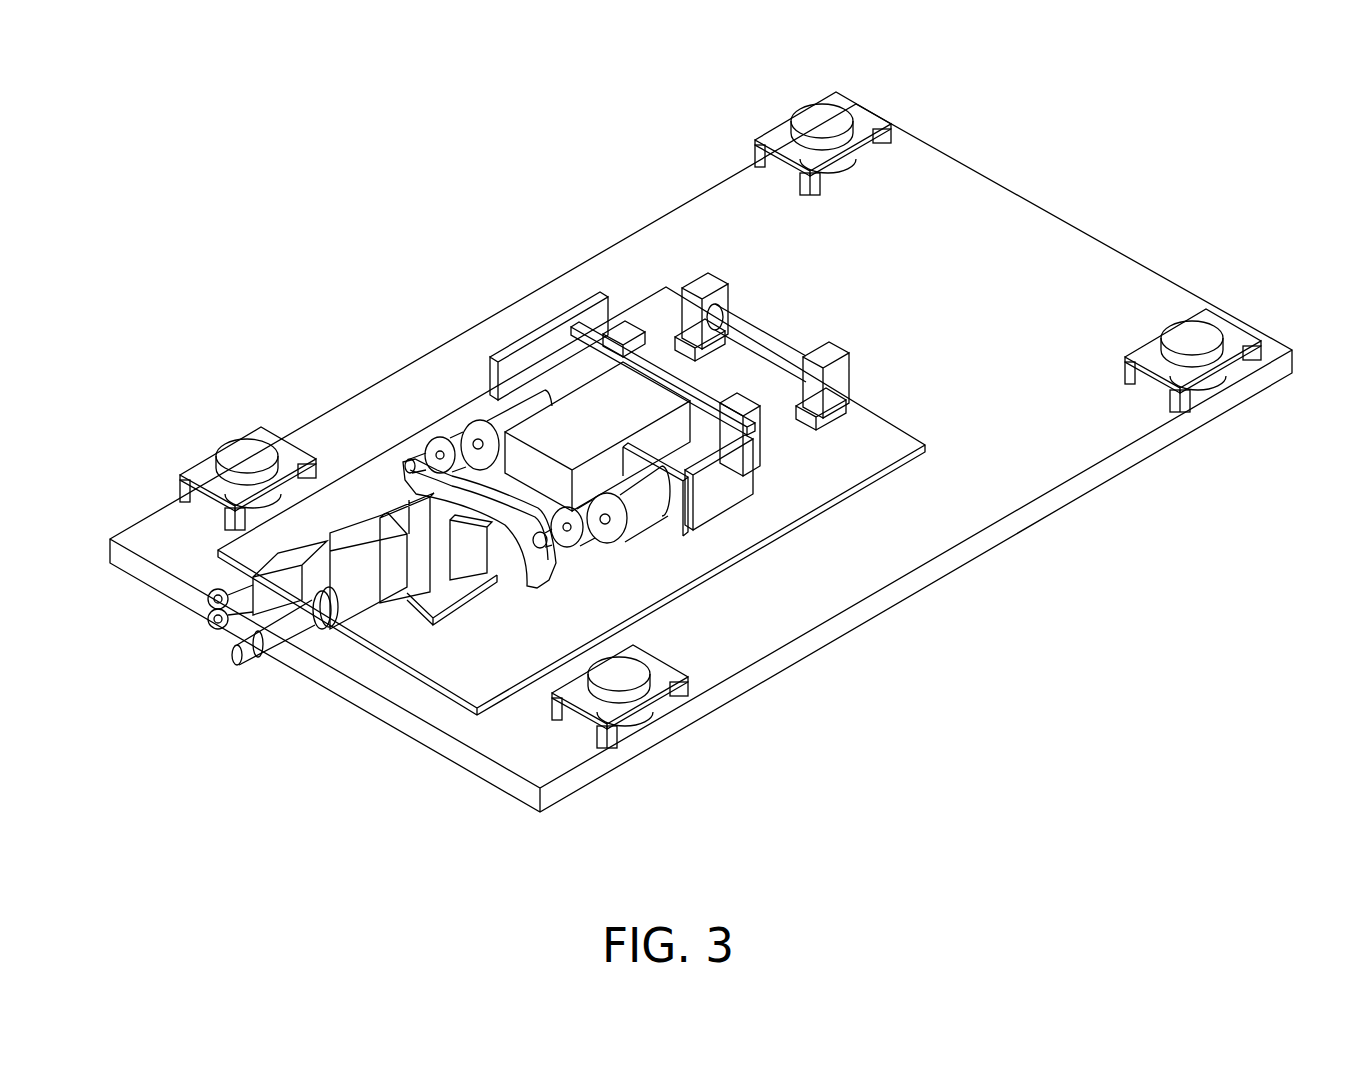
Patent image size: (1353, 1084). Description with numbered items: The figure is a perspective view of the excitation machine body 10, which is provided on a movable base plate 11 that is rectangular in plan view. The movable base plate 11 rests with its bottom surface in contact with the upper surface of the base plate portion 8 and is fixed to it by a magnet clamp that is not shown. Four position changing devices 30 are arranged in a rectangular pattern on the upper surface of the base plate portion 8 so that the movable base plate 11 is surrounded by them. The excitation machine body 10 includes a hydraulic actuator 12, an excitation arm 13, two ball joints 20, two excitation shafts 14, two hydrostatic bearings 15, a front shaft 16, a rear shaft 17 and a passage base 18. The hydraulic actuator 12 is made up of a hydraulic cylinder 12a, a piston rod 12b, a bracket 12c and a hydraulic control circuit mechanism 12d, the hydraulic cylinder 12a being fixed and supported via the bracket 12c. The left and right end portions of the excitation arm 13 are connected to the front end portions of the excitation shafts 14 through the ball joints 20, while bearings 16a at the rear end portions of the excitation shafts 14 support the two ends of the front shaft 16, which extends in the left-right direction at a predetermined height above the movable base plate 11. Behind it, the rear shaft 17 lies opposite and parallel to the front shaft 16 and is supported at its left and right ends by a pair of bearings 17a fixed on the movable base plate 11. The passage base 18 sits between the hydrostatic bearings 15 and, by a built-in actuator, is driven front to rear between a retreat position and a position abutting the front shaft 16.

The base plate portion 8 is at (1052, 218).
The excitation machine body 10 is at (476, 135).
The movable base plate 11 is at (888, 432).
The hydraulic actuator 12 is at (356, 505).
The hydraulic cylinder 12a is at (358, 605).
The piston rod 12b is at (450, 530).
The bracket 12c is at (384, 520).
The hydraulic control circuit mechanism 12d is at (208, 606).
The excitation arm 13 is at (400, 470).
The excitation shaft 14 is at (497, 418).
The hydrostatic bearing 15 is at (565, 340).
The front shaft 16 is at (650, 365).
The bearing 16a is at (605, 332).
The rear shaft 17 is at (755, 330).
The bearing 17a is at (712, 273).
The passage base 18 is at (575, 430).
The ball joint 20 is at (436, 460).
The position changing device 30 is at (838, 95).